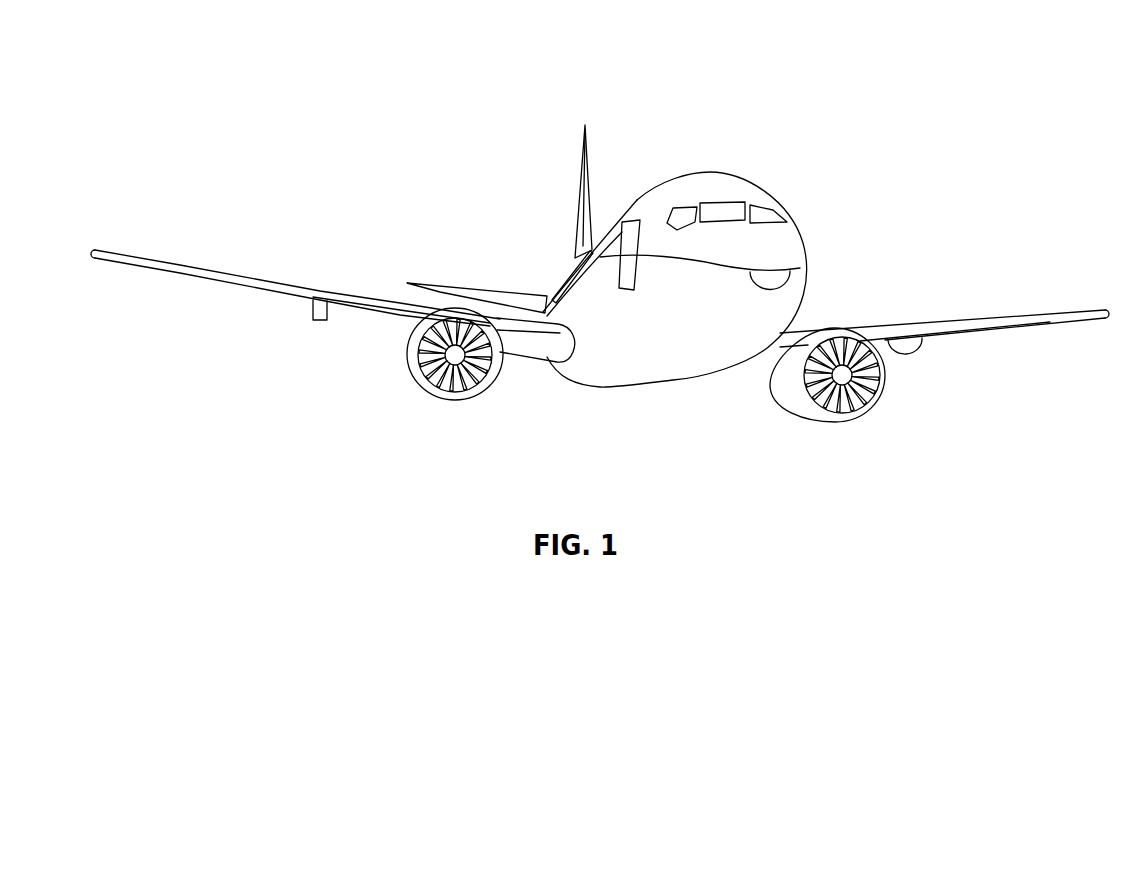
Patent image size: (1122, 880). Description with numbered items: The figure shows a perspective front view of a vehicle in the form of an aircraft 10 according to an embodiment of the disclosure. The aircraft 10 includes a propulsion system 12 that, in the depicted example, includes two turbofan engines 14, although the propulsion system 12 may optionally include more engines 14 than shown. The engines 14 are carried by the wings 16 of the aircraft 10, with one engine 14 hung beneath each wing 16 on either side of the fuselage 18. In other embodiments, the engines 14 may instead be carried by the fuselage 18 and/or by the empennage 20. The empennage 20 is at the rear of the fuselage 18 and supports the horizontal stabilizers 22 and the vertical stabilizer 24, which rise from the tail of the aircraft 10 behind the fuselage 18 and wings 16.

The aircraft 10 is at (350, 70).
The propulsion system 12 is at (932, 413).
The turbofan engines 14 is at (447, 398).
The wings 16 is at (230, 277).
The fuselage 18 is at (802, 237).
The empennage 20 is at (572, 262).
The horizontal stabilizers 22 is at (445, 288).
The vertical stabilizer 24 is at (580, 162).